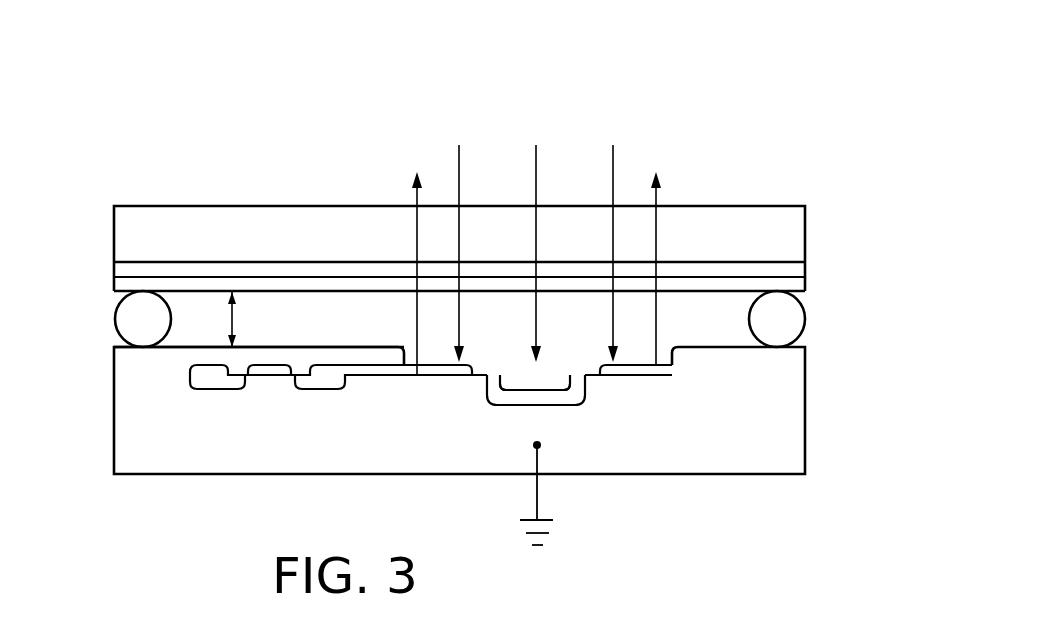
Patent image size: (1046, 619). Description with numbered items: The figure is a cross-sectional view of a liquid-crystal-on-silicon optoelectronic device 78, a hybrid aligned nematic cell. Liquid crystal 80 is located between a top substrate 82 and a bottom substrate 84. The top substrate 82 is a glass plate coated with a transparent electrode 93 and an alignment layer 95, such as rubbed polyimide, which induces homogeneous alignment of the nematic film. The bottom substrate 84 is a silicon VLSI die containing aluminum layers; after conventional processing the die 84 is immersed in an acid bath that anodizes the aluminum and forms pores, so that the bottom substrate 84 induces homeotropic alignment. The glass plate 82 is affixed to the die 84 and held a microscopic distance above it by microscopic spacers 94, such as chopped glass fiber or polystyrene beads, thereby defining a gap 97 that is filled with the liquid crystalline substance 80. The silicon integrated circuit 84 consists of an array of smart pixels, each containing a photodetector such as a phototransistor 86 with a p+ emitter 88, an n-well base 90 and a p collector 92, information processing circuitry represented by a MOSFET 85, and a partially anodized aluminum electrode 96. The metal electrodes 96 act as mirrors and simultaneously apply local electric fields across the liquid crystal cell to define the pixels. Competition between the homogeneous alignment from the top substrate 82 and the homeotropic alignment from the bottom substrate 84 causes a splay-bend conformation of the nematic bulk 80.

The LCOS optoelectronic device 78 is at (783, 158).
The liquid crystal 80 is at (200, 320).
The top substrate 82 is at (718, 218).
The bottom substrate 84 is at (780, 462).
The MOSFET 85 is at (183, 397).
The phototransistor 86 is at (572, 417).
The p+ emitter 88 is at (565, 377).
The n-well base 90 is at (507, 382).
The p collector 92 is at (494, 406).
The transparent electrode 93 is at (781, 269).
The microscopic spacers 94 is at (787, 318).
The alignment layer 95 is at (125, 284).
The partially anodized aluminum electrode 96 is at (660, 390).
The gap 97 is at (238, 320).